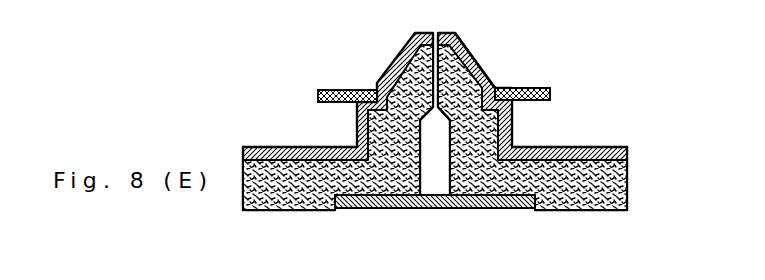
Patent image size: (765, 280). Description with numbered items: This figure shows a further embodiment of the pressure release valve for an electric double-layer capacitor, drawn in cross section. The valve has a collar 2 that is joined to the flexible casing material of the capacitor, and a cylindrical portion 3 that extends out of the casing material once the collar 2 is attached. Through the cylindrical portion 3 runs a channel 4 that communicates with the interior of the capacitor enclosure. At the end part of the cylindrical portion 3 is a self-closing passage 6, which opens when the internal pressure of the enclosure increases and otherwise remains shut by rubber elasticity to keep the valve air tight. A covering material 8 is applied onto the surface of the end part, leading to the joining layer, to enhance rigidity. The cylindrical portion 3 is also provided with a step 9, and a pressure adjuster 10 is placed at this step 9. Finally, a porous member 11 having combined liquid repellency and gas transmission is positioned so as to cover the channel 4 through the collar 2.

The collar 2 is at (588, 187).
The cylindrical portion 3 is at (511, 134).
The channel 4 is at (440, 177).
The self-closing passage 6 is at (437, 32).
The covering material 8 is at (393, 62).
The step 9 is at (498, 83).
The pressure adjuster 10 is at (530, 88).
The porous member 11 is at (382, 198).